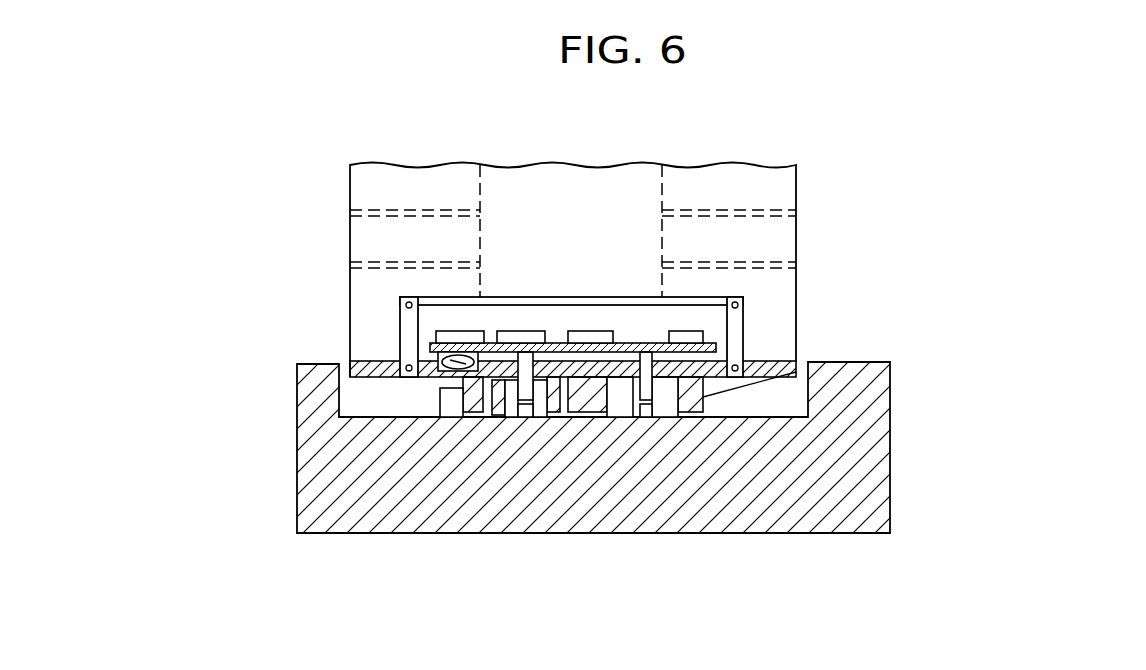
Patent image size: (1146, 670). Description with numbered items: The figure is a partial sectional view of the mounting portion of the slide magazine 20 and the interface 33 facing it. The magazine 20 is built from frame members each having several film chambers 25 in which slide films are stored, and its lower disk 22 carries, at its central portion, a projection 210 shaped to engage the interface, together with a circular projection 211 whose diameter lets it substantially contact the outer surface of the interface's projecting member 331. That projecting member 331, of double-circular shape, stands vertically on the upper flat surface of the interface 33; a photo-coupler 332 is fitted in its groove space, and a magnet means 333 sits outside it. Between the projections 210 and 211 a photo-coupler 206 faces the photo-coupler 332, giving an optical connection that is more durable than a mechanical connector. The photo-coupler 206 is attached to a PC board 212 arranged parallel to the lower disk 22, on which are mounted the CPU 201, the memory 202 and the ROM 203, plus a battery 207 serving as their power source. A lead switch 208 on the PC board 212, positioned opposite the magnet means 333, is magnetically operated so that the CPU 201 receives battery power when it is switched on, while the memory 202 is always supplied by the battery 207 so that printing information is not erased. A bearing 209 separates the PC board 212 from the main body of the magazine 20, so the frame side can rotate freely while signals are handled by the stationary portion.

The slide magazine 20 is at (796, 190).
The film chambers 25 is at (796, 243).
The lower disk 22 is at (767, 362).
The circular projection 211 is at (796, 372).
The interface 33 is at (297, 472).
The bearing 209 is at (400, 316).
The lead switch 208 is at (447, 373).
The photo-coupler 206 is at (518, 396).
The projecting member 331 is at (668, 403).
The magnet means 333 is at (457, 410).
The photo-coupler 332 is at (532, 408).
The projection 210 is at (590, 405).
The battery 207 is at (452, 330).
The ROM 203 is at (685, 330).
The PC board 212 is at (562, 343).
The CPU 201 is at (516, 331).
The memory 202 is at (601, 331).